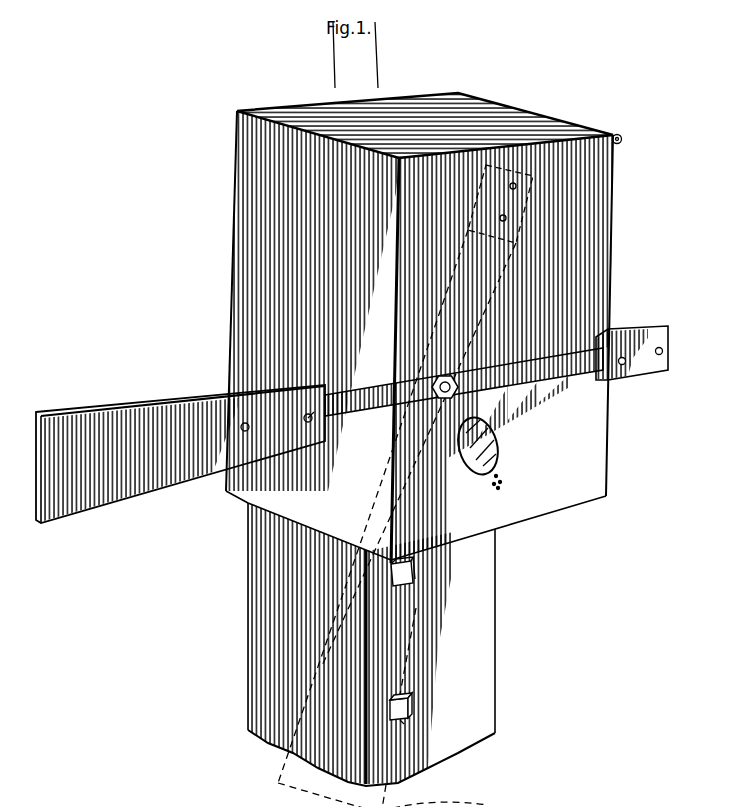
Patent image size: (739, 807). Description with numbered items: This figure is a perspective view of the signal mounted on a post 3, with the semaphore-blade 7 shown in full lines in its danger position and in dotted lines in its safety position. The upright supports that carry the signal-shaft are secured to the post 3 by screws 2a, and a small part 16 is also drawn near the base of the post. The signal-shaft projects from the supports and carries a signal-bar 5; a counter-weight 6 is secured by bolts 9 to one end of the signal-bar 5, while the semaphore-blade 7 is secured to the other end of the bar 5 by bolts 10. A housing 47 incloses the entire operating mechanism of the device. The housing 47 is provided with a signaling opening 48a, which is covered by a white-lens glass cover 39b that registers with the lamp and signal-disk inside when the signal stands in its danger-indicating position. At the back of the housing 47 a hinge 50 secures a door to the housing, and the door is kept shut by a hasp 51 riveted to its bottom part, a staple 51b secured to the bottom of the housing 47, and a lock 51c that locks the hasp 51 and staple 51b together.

The screws 2a is at (402, 706).
The post 3 is at (478, 642).
The signal-bar 5 is at (340, 386).
The counter-weight 6 is at (656, 329).
The semaphore-blade 7 is at (90, 407).
The bolts 9 is at (650, 347).
The bolts 10 is at (241, 421).
The anchor nut 16 is at (392, 688).
The glass cover 39b is at (487, 478).
The housing 47 is at (385, 441).
The signaling opening 48a is at (490, 436).
The hinge 50 is at (590, 125).
The hasp 51 is at (492, 466).
The staple 51b is at (496, 475).
The lock 51c is at (491, 483).